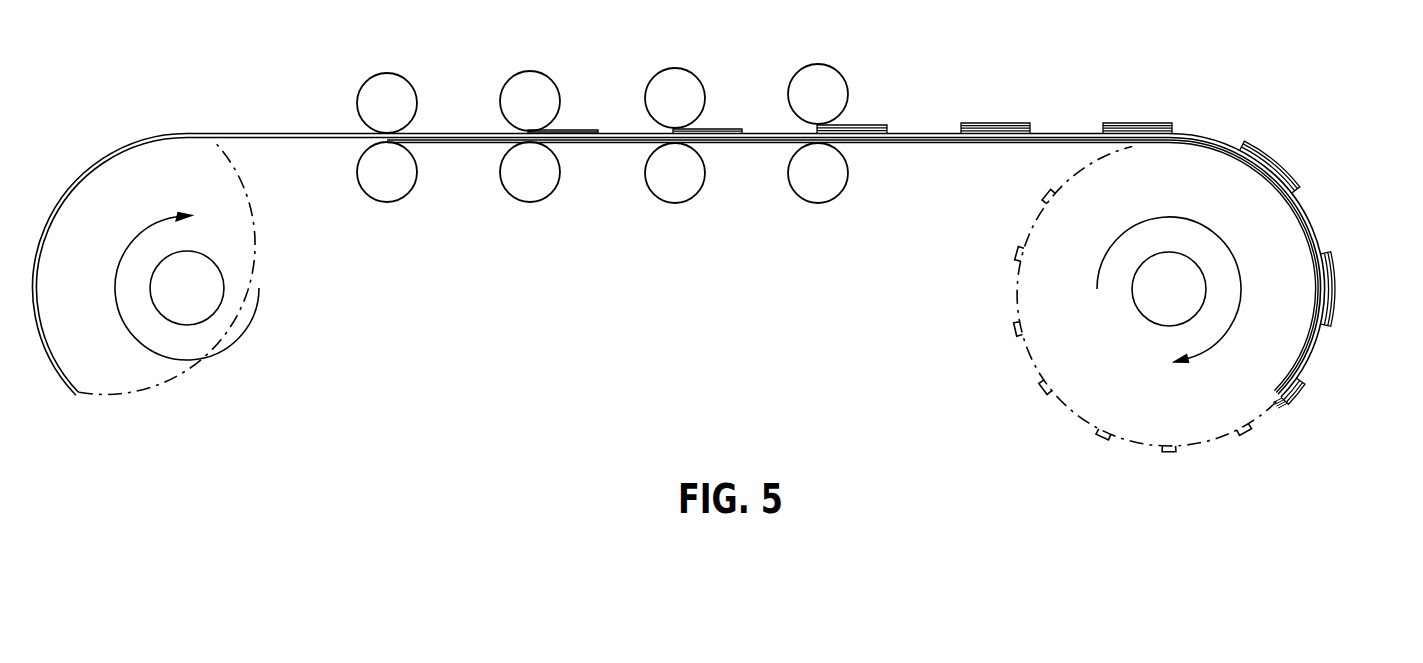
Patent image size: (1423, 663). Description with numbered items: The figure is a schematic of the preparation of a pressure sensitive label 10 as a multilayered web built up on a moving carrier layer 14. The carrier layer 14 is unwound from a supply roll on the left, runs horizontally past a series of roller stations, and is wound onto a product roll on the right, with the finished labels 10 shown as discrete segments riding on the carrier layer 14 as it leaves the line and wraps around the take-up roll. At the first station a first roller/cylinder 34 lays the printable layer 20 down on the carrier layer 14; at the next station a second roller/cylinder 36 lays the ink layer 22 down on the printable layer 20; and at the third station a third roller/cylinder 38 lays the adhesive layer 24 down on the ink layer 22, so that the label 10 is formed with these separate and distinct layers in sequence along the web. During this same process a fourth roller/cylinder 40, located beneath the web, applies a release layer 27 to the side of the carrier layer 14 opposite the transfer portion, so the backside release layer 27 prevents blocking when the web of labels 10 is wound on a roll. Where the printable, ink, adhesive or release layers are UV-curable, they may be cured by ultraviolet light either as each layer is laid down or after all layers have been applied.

The pressure sensitive label 10 is at (996, 112).
The carrier layer 14 is at (293, 133).
The printable layer 20 is at (589, 130).
The ink layer 22 is at (731, 129).
The adhesive layer 24 is at (877, 125).
The release layer 27 is at (456, 143).
The first roller/cylinder 34 is at (531, 80).
The second roller/cylinder 36 is at (675, 82).
The third roller/cylinder 38 is at (818, 82).
The fourth roller/cylinder 40 is at (386, 200).